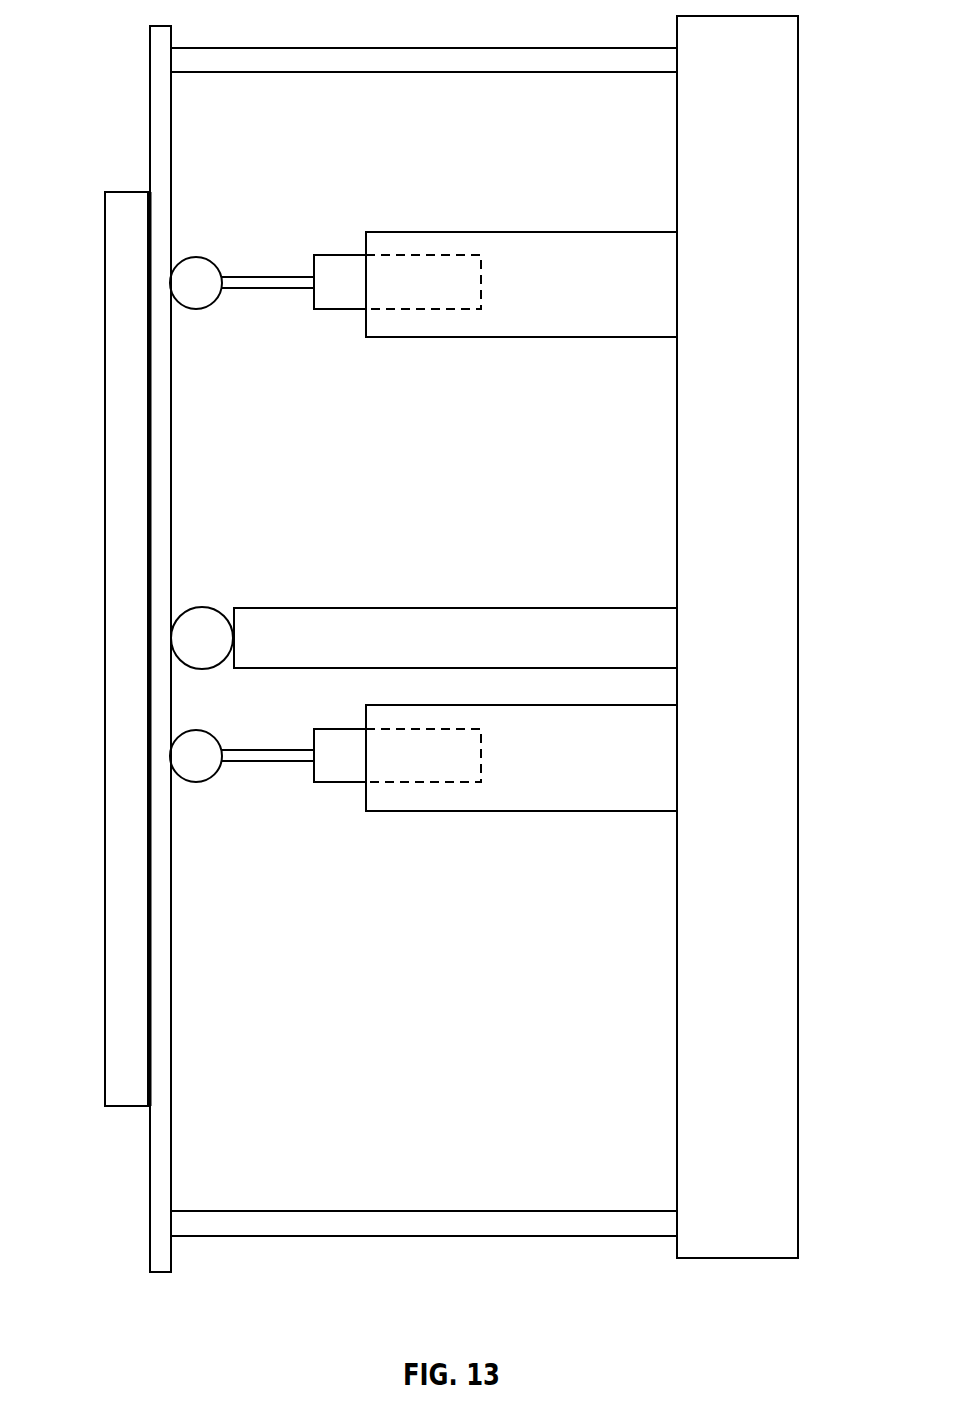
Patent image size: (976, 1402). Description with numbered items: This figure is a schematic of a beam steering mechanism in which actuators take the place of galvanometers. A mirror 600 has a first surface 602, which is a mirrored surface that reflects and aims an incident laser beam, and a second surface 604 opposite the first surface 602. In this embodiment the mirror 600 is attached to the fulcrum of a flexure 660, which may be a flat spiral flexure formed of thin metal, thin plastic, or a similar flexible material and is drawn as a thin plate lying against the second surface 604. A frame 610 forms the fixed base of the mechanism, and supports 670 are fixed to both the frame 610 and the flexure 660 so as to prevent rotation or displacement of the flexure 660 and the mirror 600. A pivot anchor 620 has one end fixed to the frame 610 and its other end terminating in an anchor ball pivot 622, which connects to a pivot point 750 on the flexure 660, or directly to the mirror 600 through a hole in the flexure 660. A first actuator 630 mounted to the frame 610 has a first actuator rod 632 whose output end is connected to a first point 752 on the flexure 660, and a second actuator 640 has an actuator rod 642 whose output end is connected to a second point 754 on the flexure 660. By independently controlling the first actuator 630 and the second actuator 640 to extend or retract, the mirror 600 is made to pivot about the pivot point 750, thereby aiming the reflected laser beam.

The mirror 600 is at (83, 630).
The first surface 602 is at (105, 422).
The second surface 604 is at (150, 392).
The frame 610 is at (792, 549).
The pivot anchor 620 is at (425, 625).
The anchor ball pivot 622 is at (197, 620).
The first actuator 630 is at (528, 243).
The first actuator rod 632 is at (274, 282).
The second actuator 640 is at (547, 792).
The actuator rod 642 is at (272, 758).
The flexure 660 is at (162, 1063).
The supports 670 is at (437, 65).
The pivot point 750 is at (147, 603).
The first point 752 is at (171, 283).
The second point 754 is at (171, 757).